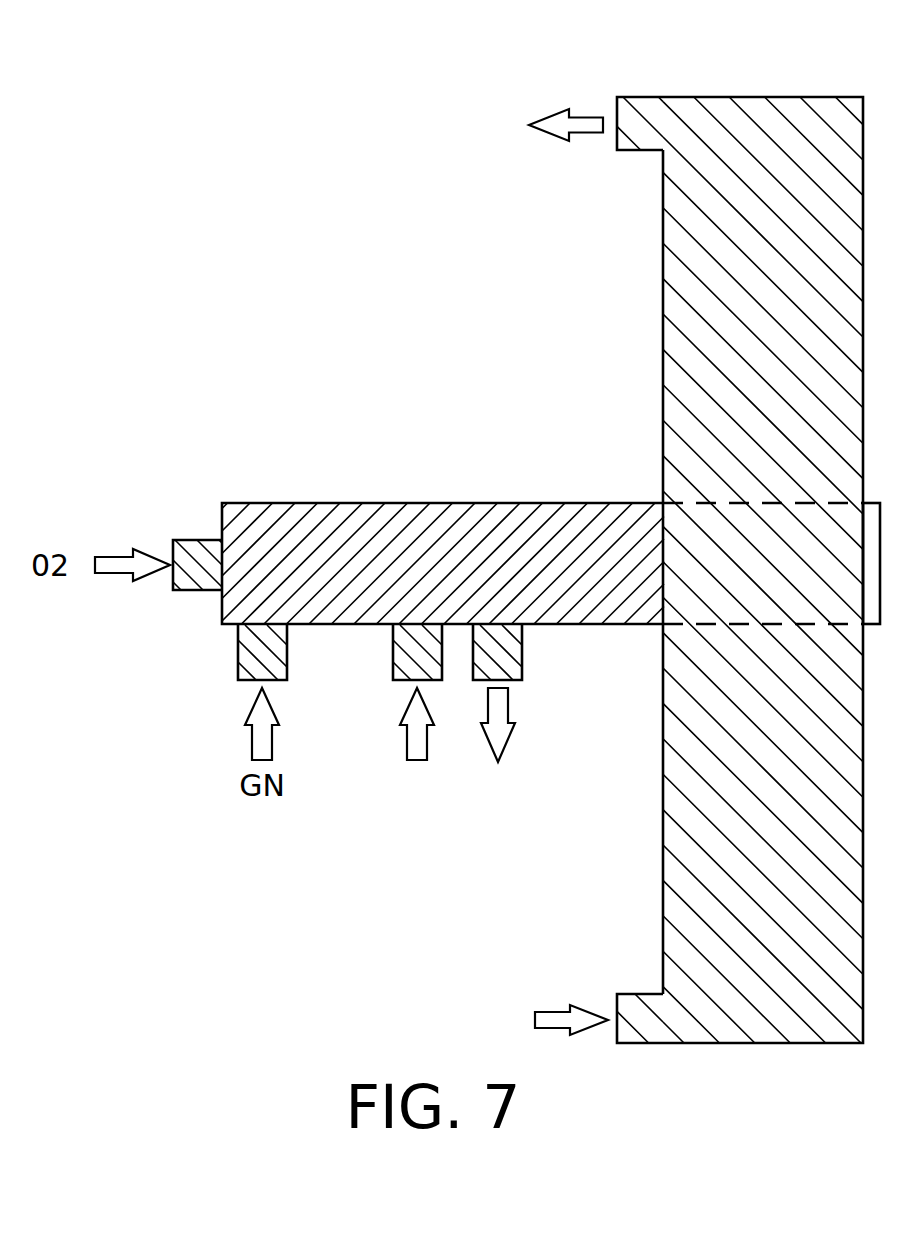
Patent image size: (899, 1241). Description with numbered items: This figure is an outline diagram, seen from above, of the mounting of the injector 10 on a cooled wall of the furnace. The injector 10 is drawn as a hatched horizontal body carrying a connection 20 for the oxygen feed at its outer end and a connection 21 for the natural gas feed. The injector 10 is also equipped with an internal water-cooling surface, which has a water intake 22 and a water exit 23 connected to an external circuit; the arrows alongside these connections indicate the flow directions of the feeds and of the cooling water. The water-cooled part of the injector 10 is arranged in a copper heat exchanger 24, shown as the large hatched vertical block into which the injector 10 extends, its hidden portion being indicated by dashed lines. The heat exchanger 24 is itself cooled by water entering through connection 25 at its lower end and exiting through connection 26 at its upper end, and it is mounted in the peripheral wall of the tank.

The injector 10 is at (400, 484).
The connection for the oxygen feed 20 is at (197, 540).
The connection for the natural gas feed 21 is at (238, 654).
The water intake 22 is at (393, 653).
The water exit 23 is at (522, 653).
The copper heat exchanger 24 is at (758, 1070).
The connection 25 is at (652, 1043).
The connection 26 is at (652, 97).